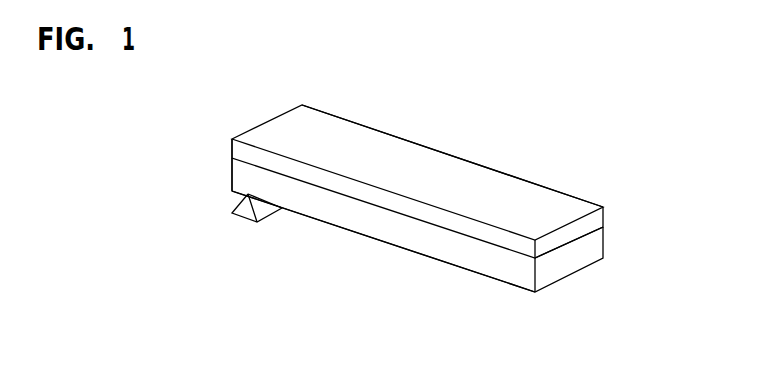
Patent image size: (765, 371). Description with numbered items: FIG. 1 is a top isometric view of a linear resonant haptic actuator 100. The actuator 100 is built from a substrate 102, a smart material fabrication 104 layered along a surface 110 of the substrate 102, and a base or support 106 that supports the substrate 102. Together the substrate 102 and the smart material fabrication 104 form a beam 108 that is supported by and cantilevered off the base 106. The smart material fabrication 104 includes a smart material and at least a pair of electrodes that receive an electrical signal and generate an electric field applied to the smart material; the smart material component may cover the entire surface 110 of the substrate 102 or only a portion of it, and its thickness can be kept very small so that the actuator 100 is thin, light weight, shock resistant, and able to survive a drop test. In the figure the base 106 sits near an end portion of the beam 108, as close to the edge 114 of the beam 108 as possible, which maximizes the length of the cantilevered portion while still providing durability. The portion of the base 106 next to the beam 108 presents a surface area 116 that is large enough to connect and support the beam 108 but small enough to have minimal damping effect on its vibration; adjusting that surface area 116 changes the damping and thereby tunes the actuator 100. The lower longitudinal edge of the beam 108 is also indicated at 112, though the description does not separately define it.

The linear resonant haptic actuator 100 is at (488, 107).
The substrate 102 is at (605, 240).
The smart material fabrication 104 is at (557, 191).
The base or support 106 is at (247, 218).
The beam 108 is at (365, 127).
The surface of the substrate 110 is at (557, 246).
The bottom edge 112 is at (475, 273).
The edge of the beam 114 is at (232, 165).
The surface area 116 is at (247, 193).